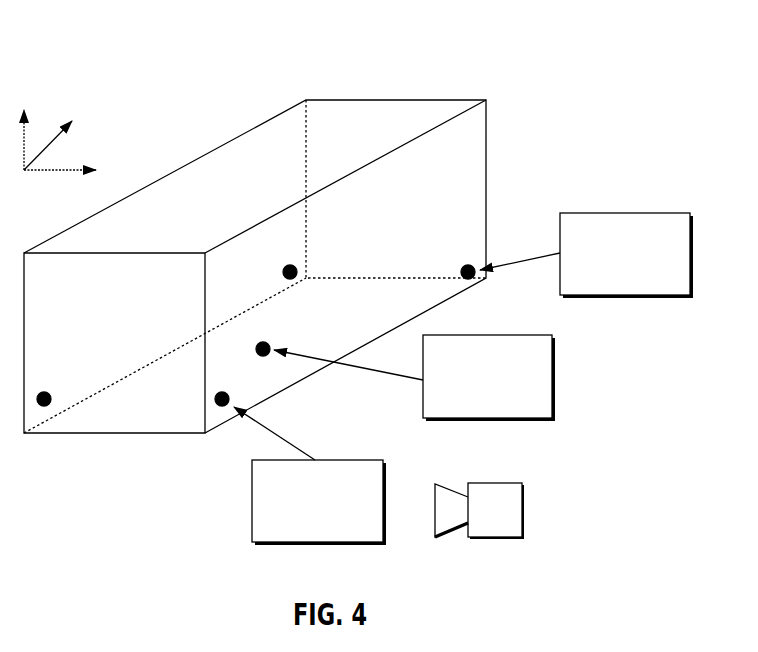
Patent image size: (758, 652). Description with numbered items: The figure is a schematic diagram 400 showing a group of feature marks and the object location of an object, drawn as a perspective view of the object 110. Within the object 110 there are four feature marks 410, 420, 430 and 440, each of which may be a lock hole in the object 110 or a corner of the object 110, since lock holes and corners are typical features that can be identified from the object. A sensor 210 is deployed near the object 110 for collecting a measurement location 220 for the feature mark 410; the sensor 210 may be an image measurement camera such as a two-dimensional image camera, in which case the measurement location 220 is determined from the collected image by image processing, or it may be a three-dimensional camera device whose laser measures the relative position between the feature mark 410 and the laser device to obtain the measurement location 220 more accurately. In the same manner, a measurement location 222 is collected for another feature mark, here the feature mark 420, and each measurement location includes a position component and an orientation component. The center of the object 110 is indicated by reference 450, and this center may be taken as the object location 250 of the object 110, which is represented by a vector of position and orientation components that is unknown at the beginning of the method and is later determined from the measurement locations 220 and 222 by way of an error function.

The schematic diagram 400 is at (186, 45).
The object 110 is at (412, 99).
The feature mark 430 is at (296, 266).
The feature mark 420 is at (472, 266).
The center of the object 450 is at (268, 343).
The feature mark 410 is at (227, 392).
The feature mark 440 is at (48, 393).
The measurement location 222 is at (658, 212).
The object location 250 is at (520, 334).
The measurement location 220 is at (350, 459).
The sensor 210 is at (505, 482).